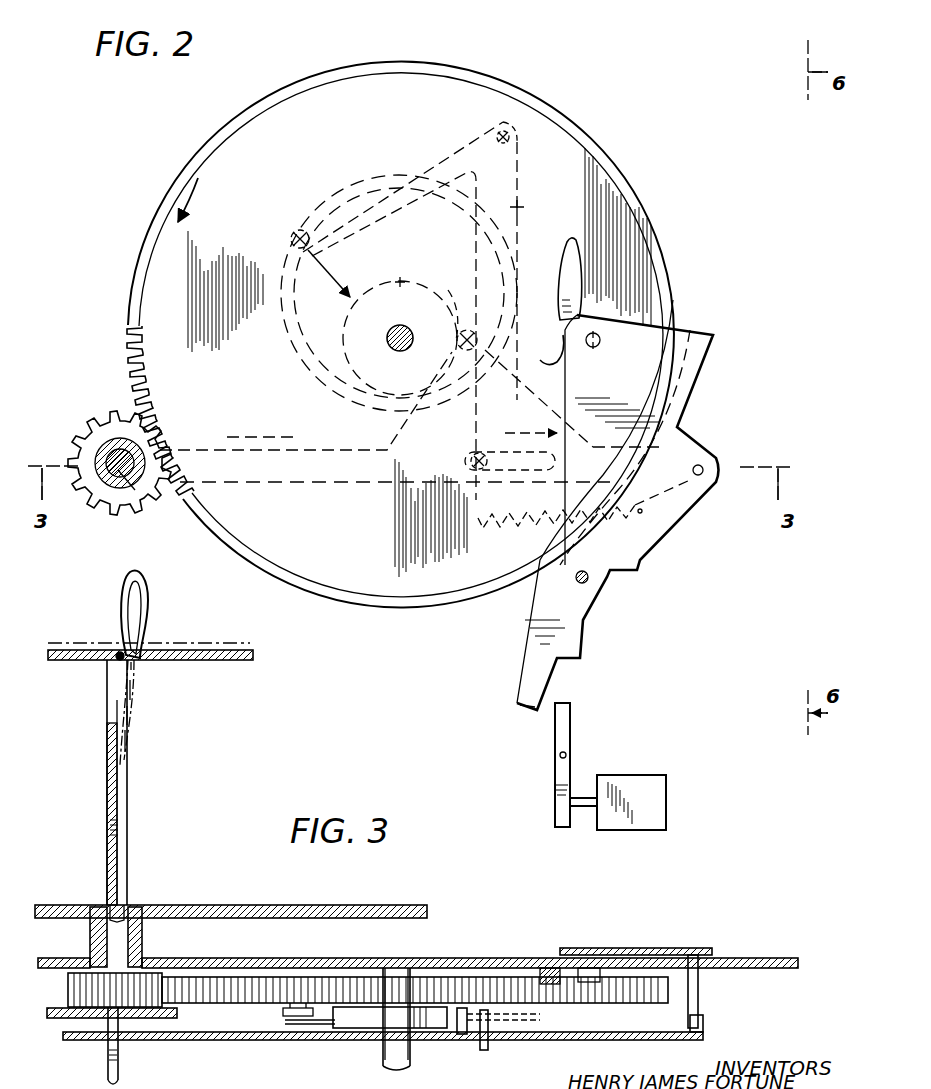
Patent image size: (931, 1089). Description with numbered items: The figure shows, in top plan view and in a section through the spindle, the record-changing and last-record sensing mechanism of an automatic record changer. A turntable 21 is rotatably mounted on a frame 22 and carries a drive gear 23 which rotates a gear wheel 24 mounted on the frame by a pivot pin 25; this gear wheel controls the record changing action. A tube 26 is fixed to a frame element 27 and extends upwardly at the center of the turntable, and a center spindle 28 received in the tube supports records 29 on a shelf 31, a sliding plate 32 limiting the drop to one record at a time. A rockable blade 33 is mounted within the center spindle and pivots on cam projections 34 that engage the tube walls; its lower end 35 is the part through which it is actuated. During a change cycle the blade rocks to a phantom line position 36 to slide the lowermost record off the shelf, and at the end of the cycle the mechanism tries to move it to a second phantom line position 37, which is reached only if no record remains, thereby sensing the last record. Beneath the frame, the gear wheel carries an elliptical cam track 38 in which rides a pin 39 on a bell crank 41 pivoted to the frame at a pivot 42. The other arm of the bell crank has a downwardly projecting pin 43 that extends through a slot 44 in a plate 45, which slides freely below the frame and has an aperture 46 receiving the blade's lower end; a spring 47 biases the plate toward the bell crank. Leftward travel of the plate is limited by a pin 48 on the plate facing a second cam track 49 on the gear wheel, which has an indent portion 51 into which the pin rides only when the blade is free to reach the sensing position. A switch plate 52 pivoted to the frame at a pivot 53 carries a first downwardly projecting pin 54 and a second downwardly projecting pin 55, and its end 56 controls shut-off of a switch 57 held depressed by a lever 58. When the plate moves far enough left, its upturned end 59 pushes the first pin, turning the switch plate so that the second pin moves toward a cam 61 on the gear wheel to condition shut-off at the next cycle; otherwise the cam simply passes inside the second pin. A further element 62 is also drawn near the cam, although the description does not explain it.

In FIG. 3, the turntable 21 is at (300, 905).
In FIG. 3, the frame 22 is at (790, 958).
In FIG. 2, the drive gear 23 is at (106, 432).
In FIG. 3, the drive gear 23 is at (68, 992).
In FIG. 2, the gear wheel 24 is at (195, 184).
In FIG. 3, the gear wheel 24 is at (224, 978).
In FIG. 2, the pivot pin 25 is at (387, 338).
In FIG. 3, the pivot pin 25 is at (383, 1062).
In FIG. 3, the tube 26 is at (130, 912).
In FIG. 3, the frame element 27 is at (56, 1018).
In FIG. 2, the center spindle 28 is at (100, 455).
In FIG. 3, the center spindle 28 is at (108, 832).
In FIG. 3, the records 29 is at (248, 674).
In FIG. 3, the shelf 31 is at (118, 652).
In FIG. 3, the sliding plate 32 is at (146, 626).
In FIG. 2, the rockable blade 33 is at (132, 490).
In FIG. 3, the rockable blade 33 is at (135, 690).
In FIG. 3, the cam projections 34 is at (96, 906).
In FIG. 3, the lower end 35 is at (118, 1080).
In FIG. 3, the phantom line position 36 is at (110, 667).
In FIG. 3, the phantom line position 37 is at (140, 668).
In FIG. 2, the elliptical cam track 38 is at (300, 358).
In FIG. 2, the pin 39 is at (295, 232).
In FIG. 3, the pin 39 is at (283, 1012).
In FIG. 2, the bell crank 41 is at (524, 208).
In FIG. 3, the bell crank 41 is at (315, 1026).
In FIG. 2, the pivot 42 is at (510, 146).
In FIG. 2, the pin 43 is at (475, 455).
In FIG. 3, the pin 43 is at (485, 1050).
In FIG. 3, the slot 44 is at (542, 1042).
In FIG. 2, the plate 45 is at (338, 486).
In FIG. 3, the plate 45 is at (383, 1054).
In FIG. 3, the aperture 46 is at (107, 1045).
In FIG. 2, the spring 47 is at (520, 530).
In FIG. 2, the pin 48 is at (466, 351).
In FIG. 3, the pin 48 is at (460, 1032).
In FIG. 2, the second cam track 49 is at (400, 275).
In FIG. 3, the second cam track 49 is at (425, 1010).
In FIG. 2, the indent portion 51 is at (451, 302).
In FIG. 2, the switch plate 52 is at (696, 338).
In FIG. 3, the switch plate 52 is at (688, 948).
In FIG. 2, the pivot 53 is at (588, 578).
In FIG. 2, the first downwardly projecting pin 54 is at (698, 478).
In FIG. 3, the first downwardly projecting pin 54 is at (698, 1000).
In FIG. 2, the second downwardly projecting pin 55 is at (594, 348).
In FIG. 3, the second downwardly projecting pin 55 is at (590, 968).
In FIG. 2, the end 56 is at (517, 705).
In FIG. 2, the switch 57 is at (640, 786).
In FIG. 2, the lever 58 is at (570, 718).
In FIG. 3, the upturned end 59 is at (703, 1030).
In FIG. 2, the cam 61 is at (565, 272).
In FIG. 3, the cam 61 is at (550, 968).
In FIG. 2, the hook 62 is at (539, 350).